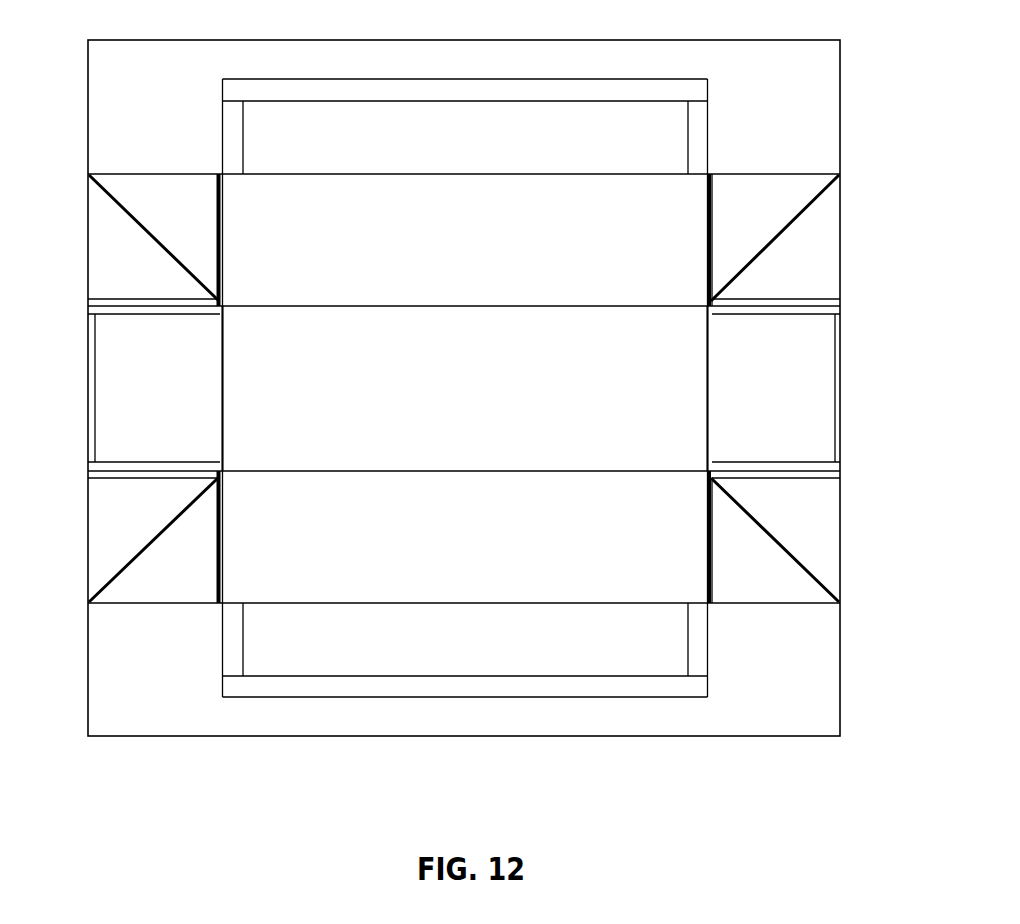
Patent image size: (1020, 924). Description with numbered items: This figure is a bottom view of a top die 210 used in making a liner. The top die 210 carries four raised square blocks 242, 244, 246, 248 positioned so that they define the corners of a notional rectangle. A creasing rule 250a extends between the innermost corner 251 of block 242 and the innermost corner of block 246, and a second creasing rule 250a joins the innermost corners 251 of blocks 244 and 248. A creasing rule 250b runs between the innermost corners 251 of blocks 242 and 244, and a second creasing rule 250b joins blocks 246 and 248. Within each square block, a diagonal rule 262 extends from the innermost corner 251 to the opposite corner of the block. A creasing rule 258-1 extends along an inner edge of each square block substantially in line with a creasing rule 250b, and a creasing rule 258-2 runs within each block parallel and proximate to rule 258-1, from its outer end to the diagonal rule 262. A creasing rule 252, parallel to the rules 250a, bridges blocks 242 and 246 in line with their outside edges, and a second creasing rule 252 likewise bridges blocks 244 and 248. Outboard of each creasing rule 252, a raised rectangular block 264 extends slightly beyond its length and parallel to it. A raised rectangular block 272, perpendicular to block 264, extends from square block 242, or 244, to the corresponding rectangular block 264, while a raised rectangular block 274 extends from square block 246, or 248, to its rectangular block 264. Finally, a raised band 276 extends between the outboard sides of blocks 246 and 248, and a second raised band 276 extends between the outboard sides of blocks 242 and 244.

The top die 210 is at (193, 737).
The raised square block 242 is at (778, 600).
The raised square block 244 is at (841, 250).
The raised square block 246 is at (108, 527).
The raised square block 248 is at (100, 254).
The creasing rule 250a is at (464, 415).
The creasing rule 250b is at (224, 405).
The innermost corner 251 is at (700, 311).
The creasing rule 252 is at (372, 177).
The creasing rule 258-1 is at (707, 216).
The creasing rule 258-2 is at (712, 545).
The diagonal rule 262 is at (785, 229).
The raised rectangular block 264 is at (539, 88).
The raised rectangular block 272 is at (688, 136).
The raised rectangular block 274 is at (236, 142).
The raised band 276 is at (93, 400).